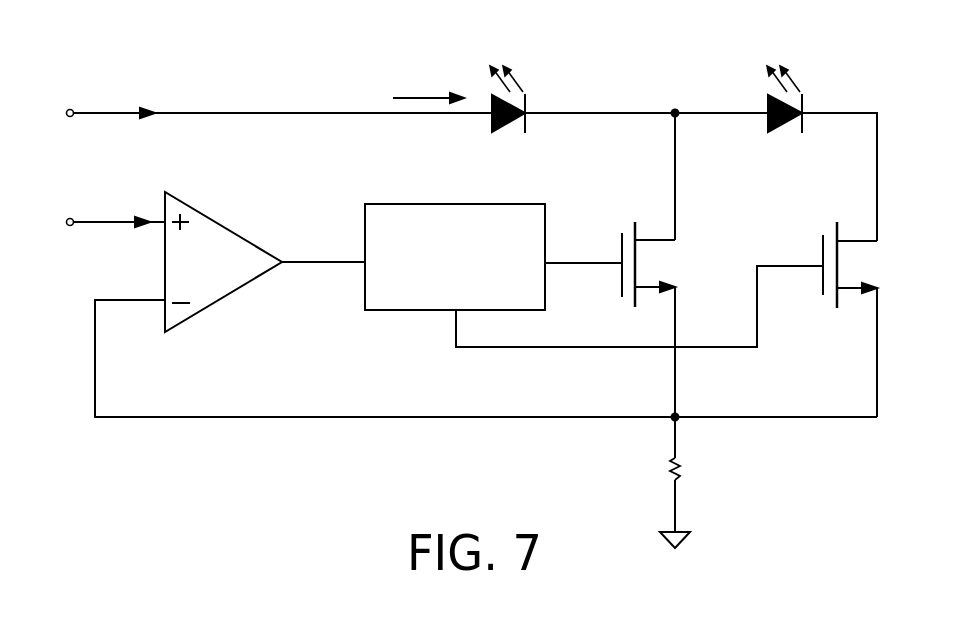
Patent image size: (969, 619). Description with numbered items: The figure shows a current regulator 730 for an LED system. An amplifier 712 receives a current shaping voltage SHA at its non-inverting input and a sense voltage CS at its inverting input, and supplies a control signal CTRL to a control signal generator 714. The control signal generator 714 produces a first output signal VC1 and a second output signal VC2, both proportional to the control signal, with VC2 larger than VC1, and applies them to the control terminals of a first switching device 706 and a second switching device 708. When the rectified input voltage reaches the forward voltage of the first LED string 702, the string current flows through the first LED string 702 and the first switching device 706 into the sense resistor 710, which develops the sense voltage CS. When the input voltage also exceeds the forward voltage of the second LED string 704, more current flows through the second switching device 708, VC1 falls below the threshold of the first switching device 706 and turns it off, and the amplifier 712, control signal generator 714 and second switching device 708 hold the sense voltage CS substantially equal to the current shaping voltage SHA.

The current regulator 730 is at (86, 31).
The first LED string 702 is at (528, 95).
The second LED string 704 is at (805, 93).
The first switching device 706 is at (620, 293).
The second switching device 708 is at (822, 295).
The sense resistor 710 is at (680, 470).
The amplifier 712 is at (213, 222).
The control signal generator 714 is at (437, 203).